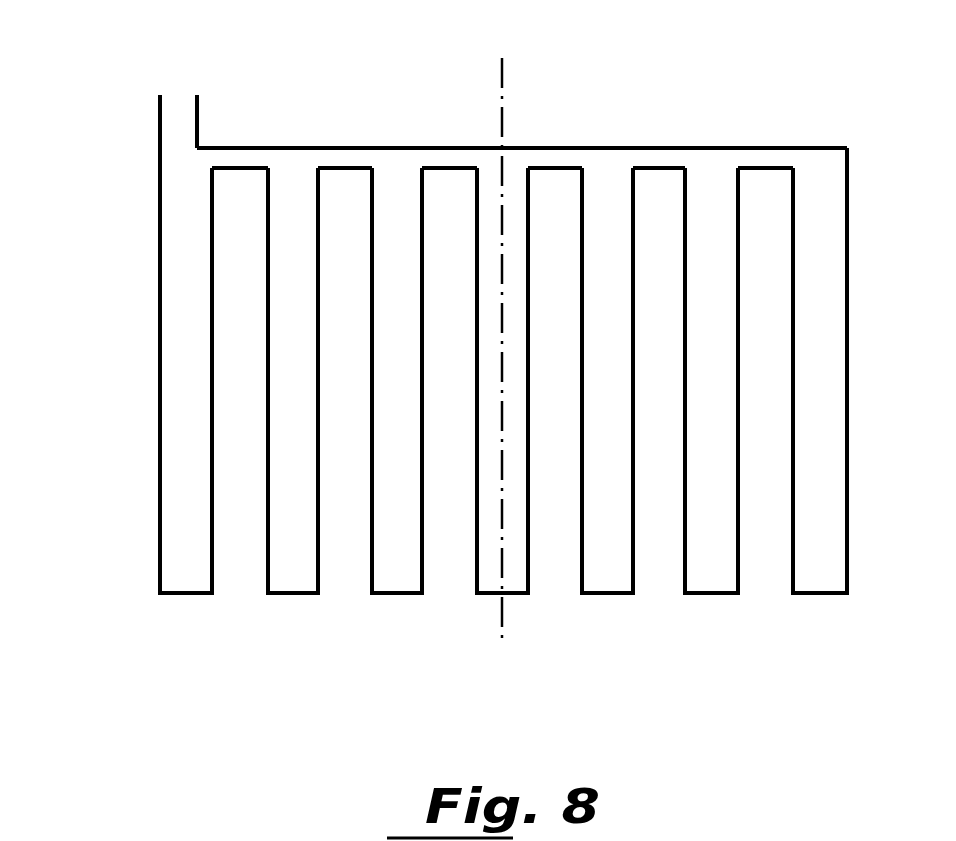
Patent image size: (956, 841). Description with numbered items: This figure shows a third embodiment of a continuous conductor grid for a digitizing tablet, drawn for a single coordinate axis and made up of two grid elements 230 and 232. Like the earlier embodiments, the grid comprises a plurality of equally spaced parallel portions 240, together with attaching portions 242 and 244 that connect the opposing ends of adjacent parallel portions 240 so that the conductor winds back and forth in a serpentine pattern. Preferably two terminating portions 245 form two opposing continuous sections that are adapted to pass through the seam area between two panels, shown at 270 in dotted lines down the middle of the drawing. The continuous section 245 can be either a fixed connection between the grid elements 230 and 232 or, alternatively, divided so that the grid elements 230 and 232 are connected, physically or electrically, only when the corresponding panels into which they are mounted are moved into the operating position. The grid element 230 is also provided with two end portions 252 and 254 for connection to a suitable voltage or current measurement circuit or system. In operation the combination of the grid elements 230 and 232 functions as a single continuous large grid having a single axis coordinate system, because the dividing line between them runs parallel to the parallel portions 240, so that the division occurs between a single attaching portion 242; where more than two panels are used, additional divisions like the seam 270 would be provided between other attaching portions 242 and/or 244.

The grid element 230 is at (357, 147).
The grid element 232 is at (756, 146).
The parallel portions 240 is at (163, 397).
The attaching portion 242 is at (195, 597).
The attaching portion 244 is at (255, 170).
The terminating portion 245 is at (460, 147).
The end portion 252 is at (157, 127).
The end portion 254 is at (200, 115).
The seam 270 is at (505, 100).